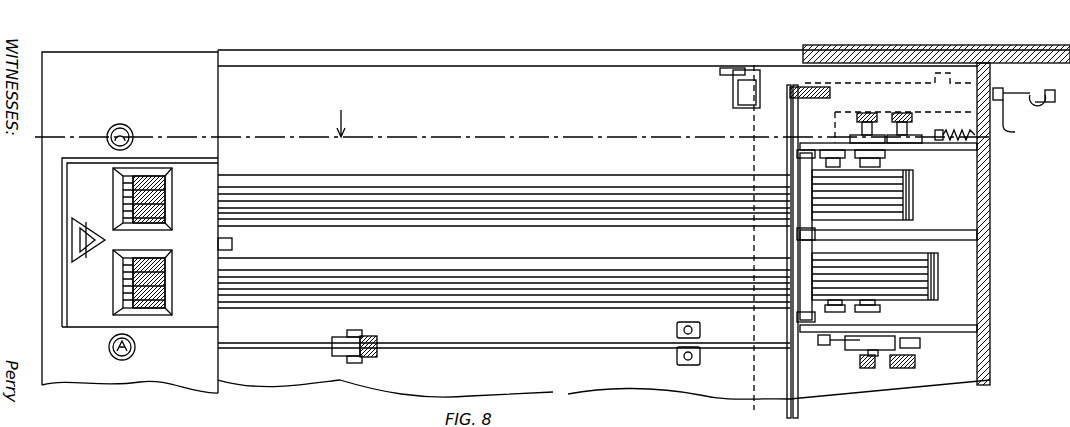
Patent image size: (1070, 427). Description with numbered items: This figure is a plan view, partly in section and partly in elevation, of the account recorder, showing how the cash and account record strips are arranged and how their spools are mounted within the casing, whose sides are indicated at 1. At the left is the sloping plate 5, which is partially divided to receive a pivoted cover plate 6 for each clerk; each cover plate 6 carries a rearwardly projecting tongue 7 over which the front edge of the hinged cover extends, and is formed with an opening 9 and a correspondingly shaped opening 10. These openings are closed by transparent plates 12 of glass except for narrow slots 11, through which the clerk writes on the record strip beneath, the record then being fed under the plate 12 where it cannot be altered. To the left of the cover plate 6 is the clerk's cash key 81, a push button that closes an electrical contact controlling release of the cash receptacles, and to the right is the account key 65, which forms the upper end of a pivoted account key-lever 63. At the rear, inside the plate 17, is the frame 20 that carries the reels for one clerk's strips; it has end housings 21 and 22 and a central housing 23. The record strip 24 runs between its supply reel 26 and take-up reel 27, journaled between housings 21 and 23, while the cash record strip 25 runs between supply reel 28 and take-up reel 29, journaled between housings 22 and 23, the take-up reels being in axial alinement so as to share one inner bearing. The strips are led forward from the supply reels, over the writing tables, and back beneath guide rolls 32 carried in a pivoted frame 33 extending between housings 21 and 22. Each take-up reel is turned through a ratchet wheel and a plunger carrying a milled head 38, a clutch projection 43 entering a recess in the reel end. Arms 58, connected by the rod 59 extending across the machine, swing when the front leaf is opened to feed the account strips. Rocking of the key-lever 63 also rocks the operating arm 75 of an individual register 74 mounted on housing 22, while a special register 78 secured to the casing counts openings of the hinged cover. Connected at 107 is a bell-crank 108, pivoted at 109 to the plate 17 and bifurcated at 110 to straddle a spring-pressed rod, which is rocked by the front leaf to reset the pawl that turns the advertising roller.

The sides of the main casing 1 is at (513, 62).
The plate 5 is at (205, 103).
The pivoted cover plate 6 is at (214, 315).
The rearwardly projecting tongue 7 is at (233, 244).
The opening 9 is at (195, 170).
The opening 10 is at (165, 310).
The slot 11 is at (125, 181).
The transparent plate 12 is at (153, 190).
The plate 17 is at (990, 268).
The frame 20 is at (990, 195).
The end housing 21 is at (978, 147).
The end housing 22 is at (972, 331).
The central housing 23 is at (975, 231).
The record strip 24 is at (645, 187).
The cash record strip 25 is at (630, 289).
The supply reel 26 is at (840, 165).
The take-up reel 27 is at (890, 168).
The supply reel 28 is at (850, 310).
The take-up reel 29 is at (905, 310).
The guide roll 32 is at (793, 168).
The pivoted frame 33 is at (789, 150).
The milled head 38 is at (870, 118).
The projection 43 is at (885, 162).
The arm 58 is at (830, 91).
The rod 59 is at (800, 246).
The account key-lever 63 is at (606, 322).
The push button or key 65 is at (132, 357).
The individual register 74 is at (858, 355).
The operating arm 75 is at (840, 345).
The special register 78 is at (738, 98).
The cash key 81 is at (126, 124).
The connection to bell-crank 107 is at (1050, 93).
The bell-crank 108 is at (1025, 93).
The pivot 109 is at (1016, 132).
The bifurcated end 110 is at (1035, 108).